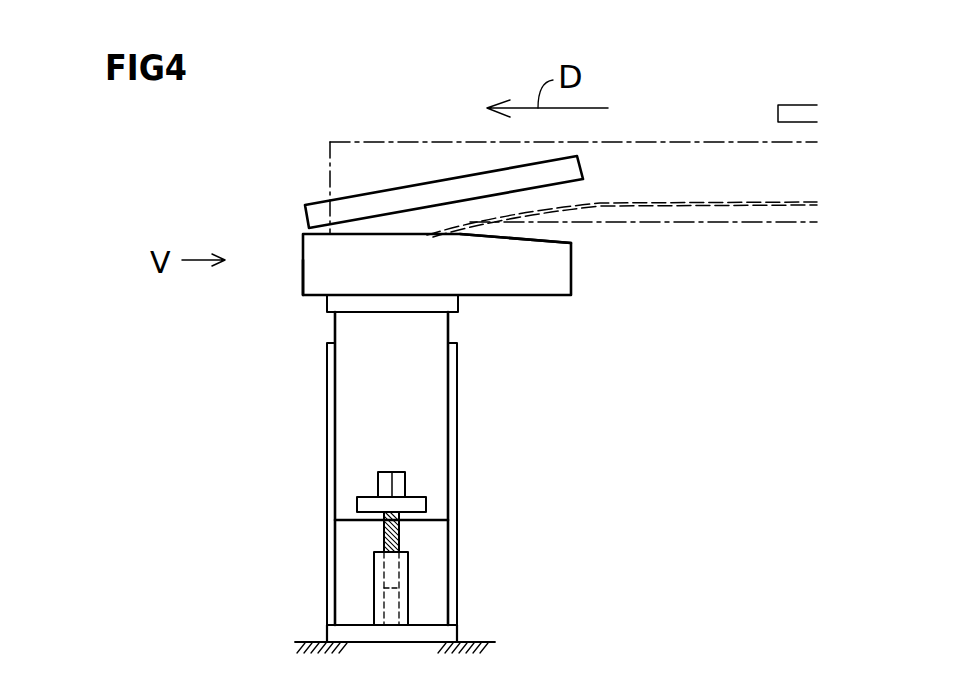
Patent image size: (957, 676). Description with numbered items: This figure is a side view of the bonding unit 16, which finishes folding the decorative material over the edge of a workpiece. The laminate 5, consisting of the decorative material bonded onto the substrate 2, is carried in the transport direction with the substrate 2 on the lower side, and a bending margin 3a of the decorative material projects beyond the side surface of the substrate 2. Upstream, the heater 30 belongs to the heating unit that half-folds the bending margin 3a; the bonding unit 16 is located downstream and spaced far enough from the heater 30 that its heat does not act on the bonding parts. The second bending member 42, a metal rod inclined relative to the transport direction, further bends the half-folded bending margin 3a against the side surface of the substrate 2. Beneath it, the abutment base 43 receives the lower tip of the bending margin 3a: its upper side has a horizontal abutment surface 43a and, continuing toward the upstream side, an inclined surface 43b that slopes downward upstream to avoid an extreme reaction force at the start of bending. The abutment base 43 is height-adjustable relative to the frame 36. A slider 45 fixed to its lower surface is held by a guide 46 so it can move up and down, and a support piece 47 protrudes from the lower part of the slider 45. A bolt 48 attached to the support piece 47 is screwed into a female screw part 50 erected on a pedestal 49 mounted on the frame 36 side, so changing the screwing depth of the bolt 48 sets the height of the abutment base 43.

The substrate 2 is at (688, 213).
The bending margin 3a is at (392, 158).
The laminate 5 is at (722, 223).
The bonding unit 16 is at (657, 345).
The heater 30 is at (795, 104).
The frame 36 is at (308, 640).
The second bending member 42 is at (322, 200).
The abutment base 43 is at (303, 240).
The abutment surface 43a is at (387, 233).
The inclined surface 43b is at (533, 237).
The slider 45 is at (415, 407).
The guide 46 is at (458, 463).
The support piece 47 is at (426, 503).
The bolt 48 is at (378, 483).
The pedestal 49 is at (453, 633).
The female screw part 50 is at (373, 567).